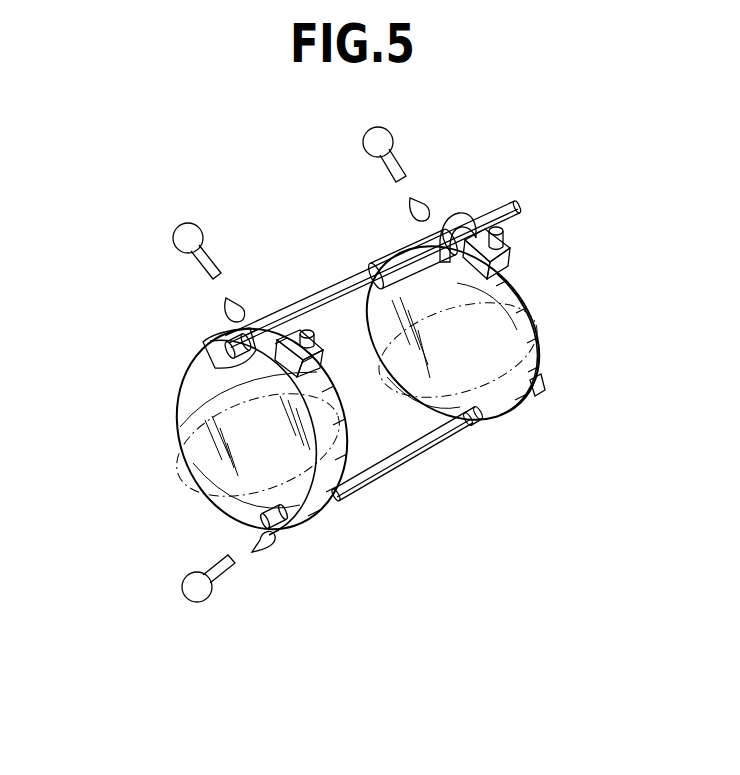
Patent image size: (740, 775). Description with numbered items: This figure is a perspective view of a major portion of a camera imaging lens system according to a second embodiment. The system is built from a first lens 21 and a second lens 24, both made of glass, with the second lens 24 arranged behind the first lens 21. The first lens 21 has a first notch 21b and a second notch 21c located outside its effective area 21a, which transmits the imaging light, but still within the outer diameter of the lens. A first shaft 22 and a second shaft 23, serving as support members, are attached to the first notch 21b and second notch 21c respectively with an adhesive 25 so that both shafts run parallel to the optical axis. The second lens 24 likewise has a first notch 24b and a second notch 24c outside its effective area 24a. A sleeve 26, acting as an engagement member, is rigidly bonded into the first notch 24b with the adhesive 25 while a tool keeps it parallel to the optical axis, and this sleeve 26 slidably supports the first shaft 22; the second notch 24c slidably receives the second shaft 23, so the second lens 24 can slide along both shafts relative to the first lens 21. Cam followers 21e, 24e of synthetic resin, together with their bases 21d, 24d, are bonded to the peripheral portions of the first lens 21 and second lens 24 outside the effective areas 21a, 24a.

The first lens 21 is at (197, 363).
The effective area 21a is at (172, 458).
The first notch 21b is at (205, 335).
The second notch 21c is at (262, 511).
The base 21d is at (344, 398).
The cam follower 21e is at (318, 337).
The first shaft 22 is at (310, 306).
The second shaft 23 is at (393, 470).
The second lens 24 is at (497, 418).
The effective area 24a is at (540, 362).
The first notch 24b is at (460, 214).
The second notch 24c is at (480, 428).
The base 24d is at (513, 258).
The cam follower 24e is at (506, 224).
The adhesive 25 is at (238, 298).
The sleeve 26 is at (392, 268).